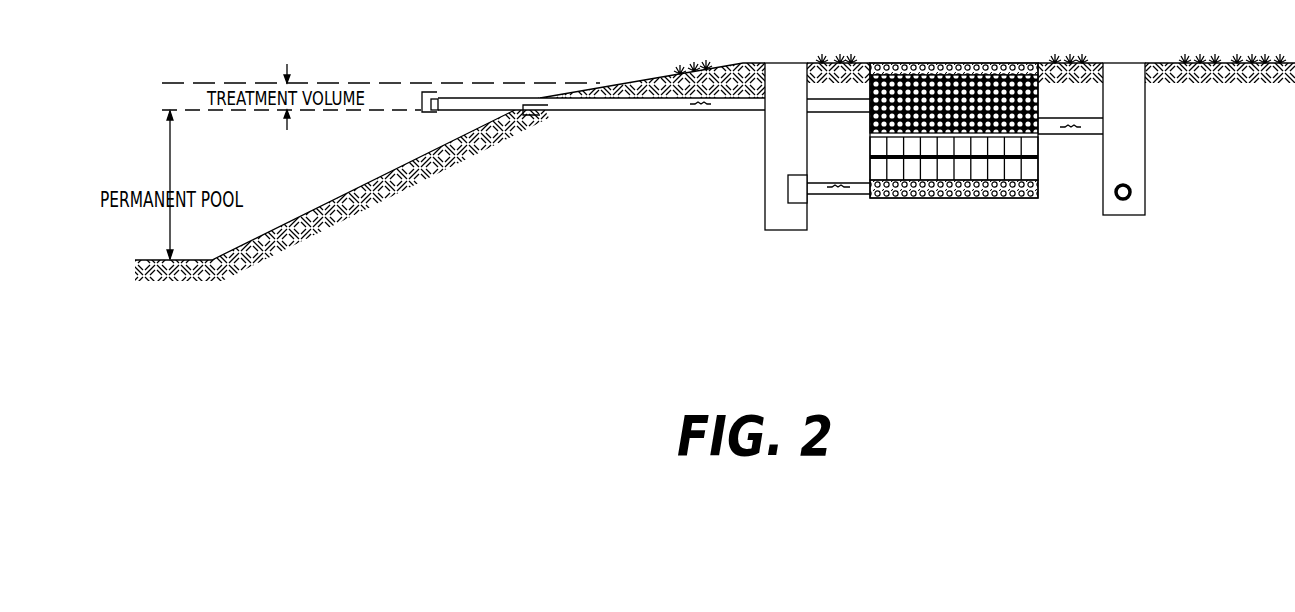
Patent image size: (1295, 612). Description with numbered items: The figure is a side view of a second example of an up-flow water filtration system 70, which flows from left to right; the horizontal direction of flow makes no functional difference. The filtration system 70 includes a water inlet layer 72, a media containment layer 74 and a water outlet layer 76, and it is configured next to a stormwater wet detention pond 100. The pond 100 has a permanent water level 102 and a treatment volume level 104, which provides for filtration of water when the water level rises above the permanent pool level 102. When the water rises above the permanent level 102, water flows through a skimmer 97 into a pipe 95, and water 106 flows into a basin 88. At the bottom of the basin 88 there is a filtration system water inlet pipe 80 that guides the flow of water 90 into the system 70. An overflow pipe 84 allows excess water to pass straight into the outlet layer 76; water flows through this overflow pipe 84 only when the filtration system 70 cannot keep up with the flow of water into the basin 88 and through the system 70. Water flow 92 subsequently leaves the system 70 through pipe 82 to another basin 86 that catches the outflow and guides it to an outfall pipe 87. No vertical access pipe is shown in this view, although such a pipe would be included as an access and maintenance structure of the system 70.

The up-flow water filtration system 70 is at (948, 198).
The water inlet layer 72 is at (976, 155).
The media containment layer 74 is at (1033, 168).
The water outlet layer 76 is at (1038, 90).
The filtration system water inlet pipe 80 is at (823, 188).
The pipe 82 is at (1094, 118).
The overflow pipe 84 is at (847, 103).
The basin 86 is at (1128, 148).
The outfall pipe 87 is at (1133, 189).
The basin 88 is at (770, 186).
The flow of water 90 is at (843, 194).
The water flow 92 is at (1062, 129).
The pipe 95 is at (577, 111).
The skimmer 97 is at (441, 104).
The stormwater wet detention pond 100 is at (288, 200).
The permanent water level 102 is at (206, 111).
The treatment volume level 104 is at (327, 83).
The water 106 is at (527, 112).